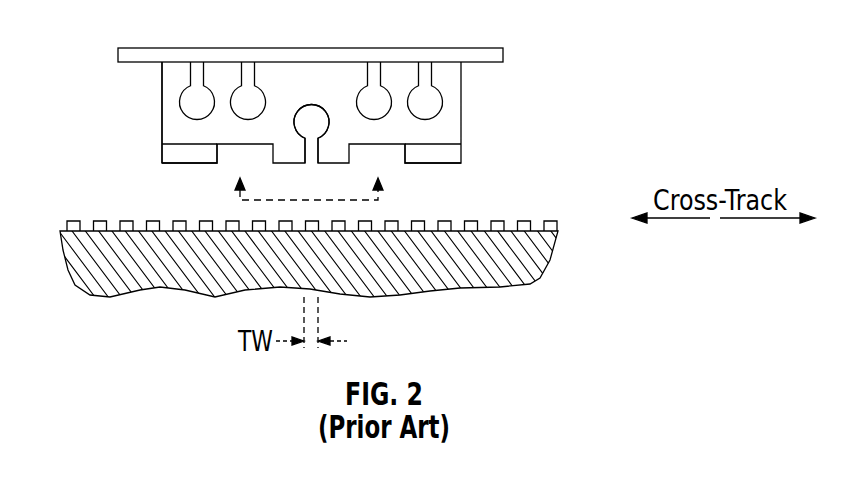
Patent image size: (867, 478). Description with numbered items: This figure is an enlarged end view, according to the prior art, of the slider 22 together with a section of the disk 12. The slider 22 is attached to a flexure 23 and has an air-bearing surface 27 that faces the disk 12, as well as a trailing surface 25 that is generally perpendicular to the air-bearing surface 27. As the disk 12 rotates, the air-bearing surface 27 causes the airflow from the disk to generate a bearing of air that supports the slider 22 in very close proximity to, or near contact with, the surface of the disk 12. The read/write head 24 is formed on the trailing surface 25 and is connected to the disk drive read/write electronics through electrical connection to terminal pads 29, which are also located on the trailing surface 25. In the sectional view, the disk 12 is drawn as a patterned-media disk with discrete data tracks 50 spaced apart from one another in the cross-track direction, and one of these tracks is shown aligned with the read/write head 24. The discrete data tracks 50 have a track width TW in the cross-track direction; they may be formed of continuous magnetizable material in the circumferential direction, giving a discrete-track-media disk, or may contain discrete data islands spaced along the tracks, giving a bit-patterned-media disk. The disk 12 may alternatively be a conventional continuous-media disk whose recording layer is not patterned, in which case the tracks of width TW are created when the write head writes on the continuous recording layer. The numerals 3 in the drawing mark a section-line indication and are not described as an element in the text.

The disk 12 is at (545, 263).
The slider 22 is at (463, 131).
The flexure 23 is at (490, 52).
The read/write head 24 is at (310, 109).
The trailing surface 25 is at (175, 131).
The air-bearing surface 27 is at (190, 163).
The terminal pads 29 is at (233, 100).
The section line 3 is at (309, 172).
The discrete data tracks 50 is at (98, 220).